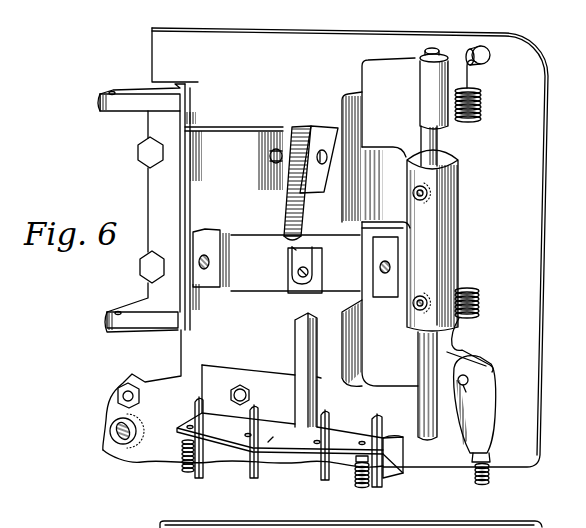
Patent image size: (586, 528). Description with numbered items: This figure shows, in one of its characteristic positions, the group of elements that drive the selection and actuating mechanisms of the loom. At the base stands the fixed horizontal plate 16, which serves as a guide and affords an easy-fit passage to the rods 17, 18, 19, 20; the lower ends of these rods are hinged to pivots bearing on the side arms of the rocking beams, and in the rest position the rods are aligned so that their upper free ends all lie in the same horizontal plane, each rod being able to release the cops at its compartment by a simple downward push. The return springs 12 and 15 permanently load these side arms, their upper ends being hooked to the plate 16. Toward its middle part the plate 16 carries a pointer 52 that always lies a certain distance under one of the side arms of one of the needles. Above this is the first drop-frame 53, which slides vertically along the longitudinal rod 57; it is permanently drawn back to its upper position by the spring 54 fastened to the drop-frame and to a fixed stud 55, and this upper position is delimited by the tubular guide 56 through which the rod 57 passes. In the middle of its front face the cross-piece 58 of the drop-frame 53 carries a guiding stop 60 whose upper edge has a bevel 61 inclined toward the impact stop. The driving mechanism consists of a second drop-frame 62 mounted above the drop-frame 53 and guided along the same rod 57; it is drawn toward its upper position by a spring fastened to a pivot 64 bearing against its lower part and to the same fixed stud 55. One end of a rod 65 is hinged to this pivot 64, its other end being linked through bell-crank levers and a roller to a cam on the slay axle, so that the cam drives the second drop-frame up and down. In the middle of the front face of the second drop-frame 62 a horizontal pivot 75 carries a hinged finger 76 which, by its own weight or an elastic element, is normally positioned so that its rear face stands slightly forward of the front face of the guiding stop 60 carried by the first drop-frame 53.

The return spring 12 is at (365, 487).
The return spring 15 is at (183, 464).
The horizontal plate 16 is at (347, 433).
The rod 17 is at (384, 482).
The rod 18 is at (327, 480).
The rod 19 is at (258, 477).
The rod 20 is at (200, 472).
The pointer 52 is at (302, 337).
The first drop-frame 53 is at (372, 328).
The spring 54 is at (483, 108).
The fixed stud 55 is at (467, 55).
The tubular guide 56 is at (445, 233).
The longitudinal rod 57 is at (440, 133).
The cross-piece 58 is at (250, 246).
The guiding stop 60 is at (310, 262).
The bevel 61 is at (295, 249).
The second drop-frame 62 is at (234, 137).
The pivot 64 is at (475, 409).
The rod 65 is at (491, 479).
The horizontal pivot 75 is at (329, 158).
The finger 76 is at (290, 206).